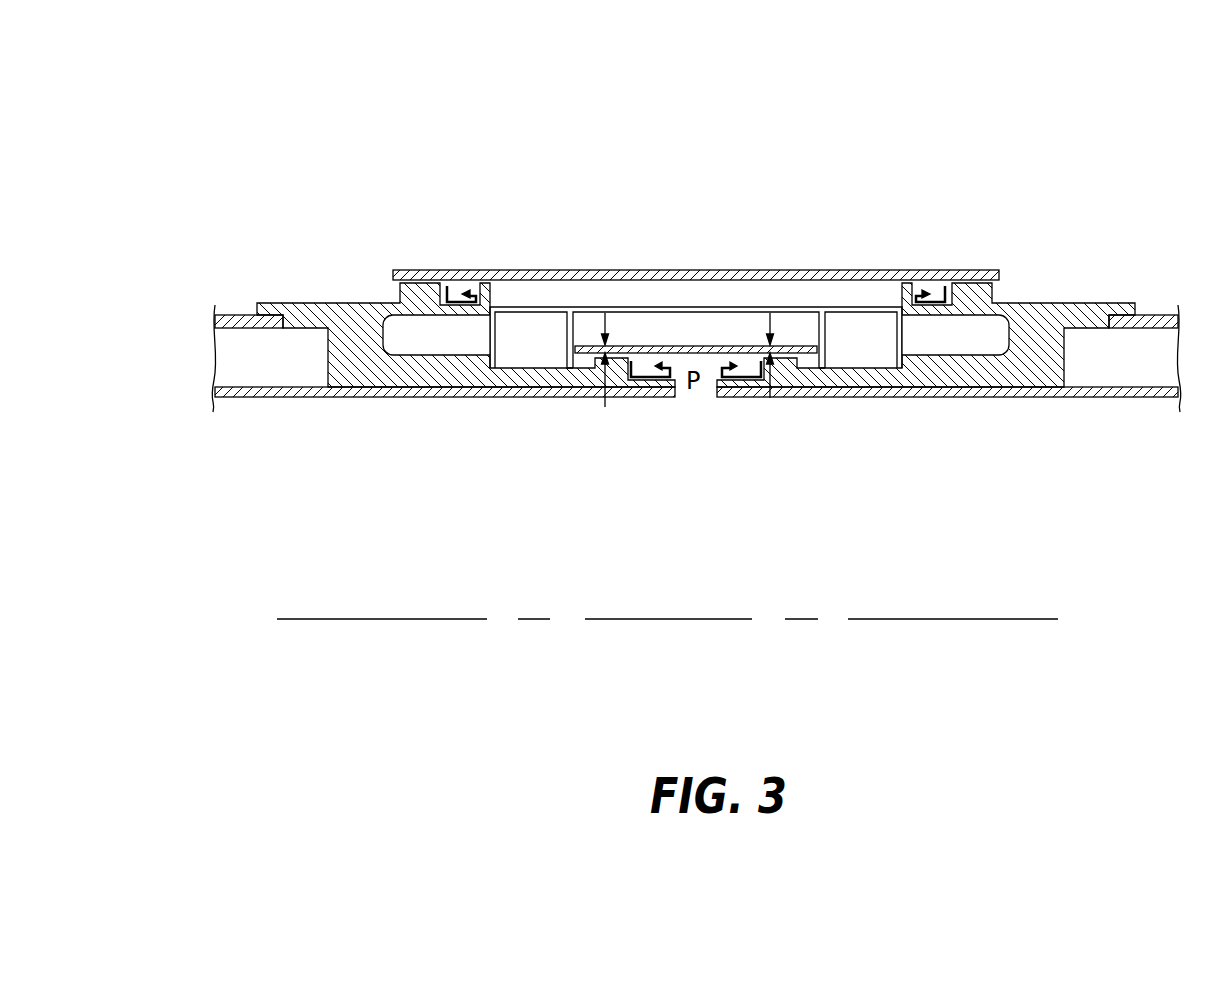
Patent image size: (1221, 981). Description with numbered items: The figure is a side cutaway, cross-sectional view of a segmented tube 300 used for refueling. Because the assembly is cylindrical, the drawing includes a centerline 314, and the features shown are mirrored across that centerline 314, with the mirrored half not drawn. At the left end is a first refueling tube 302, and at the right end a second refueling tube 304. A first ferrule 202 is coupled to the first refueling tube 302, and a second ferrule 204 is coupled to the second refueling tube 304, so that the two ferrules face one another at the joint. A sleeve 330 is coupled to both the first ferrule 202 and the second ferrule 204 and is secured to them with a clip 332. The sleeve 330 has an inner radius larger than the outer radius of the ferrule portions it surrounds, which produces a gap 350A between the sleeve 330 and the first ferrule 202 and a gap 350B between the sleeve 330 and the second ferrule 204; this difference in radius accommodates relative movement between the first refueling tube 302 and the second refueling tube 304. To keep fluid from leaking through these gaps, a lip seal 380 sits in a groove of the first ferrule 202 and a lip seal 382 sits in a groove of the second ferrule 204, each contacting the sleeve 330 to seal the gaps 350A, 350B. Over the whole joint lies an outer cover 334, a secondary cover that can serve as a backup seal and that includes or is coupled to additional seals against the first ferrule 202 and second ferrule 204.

The segmented tube 300 is at (195, 100).
The first ferrule 202 is at (322, 290).
The second ferrule 204 is at (1073, 292).
The first refueling tube 302 is at (234, 301).
The second refueling tube 304 is at (1164, 301).
The centerline 314 is at (696, 511).
The sleeve 330 is at (683, 333).
The clip 332 is at (712, 293).
The outer cover 334 is at (799, 257).
The gap 350A is at (603, 344).
The gap 350B is at (771, 370).
The lip seal 380 is at (635, 394).
The lip seal 382 is at (744, 393).